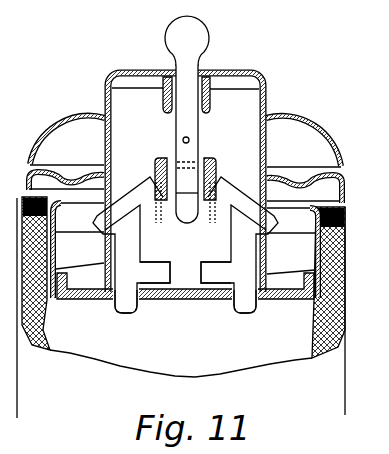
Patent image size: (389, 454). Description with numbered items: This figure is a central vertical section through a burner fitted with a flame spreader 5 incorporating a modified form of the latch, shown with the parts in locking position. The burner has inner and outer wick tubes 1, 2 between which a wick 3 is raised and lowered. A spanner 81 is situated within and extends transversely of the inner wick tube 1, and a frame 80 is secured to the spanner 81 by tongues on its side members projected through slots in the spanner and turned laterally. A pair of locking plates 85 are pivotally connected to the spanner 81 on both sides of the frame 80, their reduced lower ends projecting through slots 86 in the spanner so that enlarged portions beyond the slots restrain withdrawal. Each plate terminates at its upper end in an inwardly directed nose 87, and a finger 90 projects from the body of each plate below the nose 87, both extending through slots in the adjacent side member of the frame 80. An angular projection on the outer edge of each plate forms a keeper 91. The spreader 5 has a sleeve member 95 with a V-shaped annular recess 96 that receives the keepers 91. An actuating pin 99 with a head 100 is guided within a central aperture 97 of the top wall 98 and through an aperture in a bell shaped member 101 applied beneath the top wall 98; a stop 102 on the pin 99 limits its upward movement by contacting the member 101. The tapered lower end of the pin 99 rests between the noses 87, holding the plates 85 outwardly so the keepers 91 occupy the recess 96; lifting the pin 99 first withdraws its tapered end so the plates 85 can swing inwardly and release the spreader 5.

The inner wick tube 1 is at (318, 333).
The outer wick tube 2 is at (328, 385).
The wick 3 is at (347, 265).
The flame spreader 5 is at (293, 107).
The frame 80 is at (212, 230).
The spanner 81 is at (191, 301).
The locking plates 85 is at (185, 245).
The slots 86 is at (110, 299).
The nose 87 is at (163, 195).
The finger 90 is at (187, 274).
The keeper 91 is at (100, 229).
The sleeve member 95 is at (112, 150).
The annular recess 96 is at (96, 210).
The central aperture 97 is at (203, 73).
The top wall 98 is at (147, 70).
The actuating pin 99 is at (200, 131).
The head 100 is at (206, 33).
The bell shaped member 101 is at (210, 104).
The stop 102 is at (183, 139).